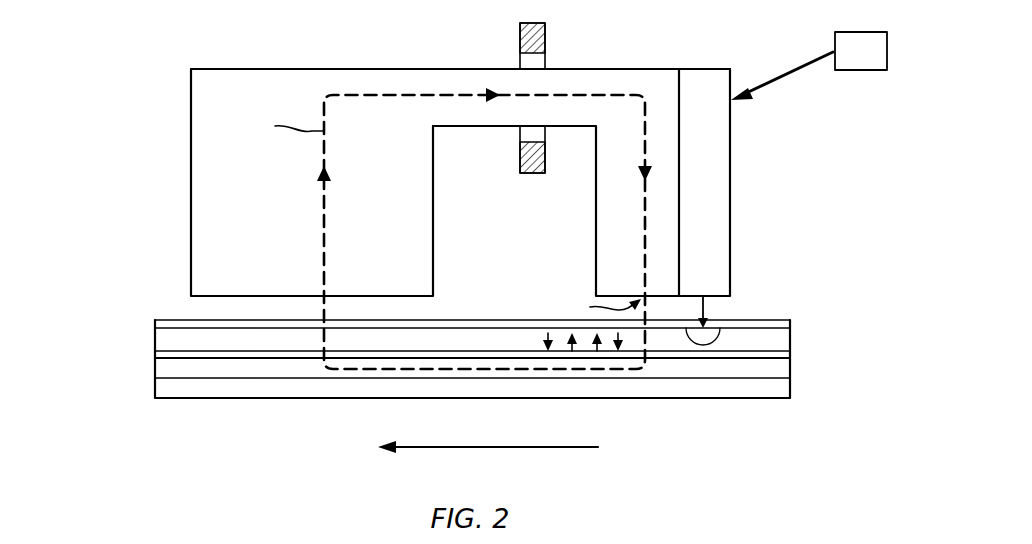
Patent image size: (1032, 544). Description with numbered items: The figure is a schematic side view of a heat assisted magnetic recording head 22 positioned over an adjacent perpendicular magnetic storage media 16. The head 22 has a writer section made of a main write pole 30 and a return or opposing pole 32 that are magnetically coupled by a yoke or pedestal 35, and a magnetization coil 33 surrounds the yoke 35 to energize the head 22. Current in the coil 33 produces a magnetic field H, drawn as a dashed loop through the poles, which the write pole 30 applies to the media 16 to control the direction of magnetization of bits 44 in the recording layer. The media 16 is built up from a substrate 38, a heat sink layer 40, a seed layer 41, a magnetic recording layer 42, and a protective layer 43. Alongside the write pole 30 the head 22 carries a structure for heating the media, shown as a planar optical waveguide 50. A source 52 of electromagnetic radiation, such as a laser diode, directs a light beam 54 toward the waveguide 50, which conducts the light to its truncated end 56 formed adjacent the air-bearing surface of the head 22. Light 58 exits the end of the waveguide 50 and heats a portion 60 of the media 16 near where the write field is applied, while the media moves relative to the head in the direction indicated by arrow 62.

The magnetic storage media 16 is at (118, 297).
The HAMR recording head 22 is at (157, 88).
The main write pole 30 is at (604, 228).
The return pole 32 is at (200, 162).
The magnetization coil 33 is at (520, 40).
The yoke 35 is at (597, 83).
The substrate 38 is at (300, 392).
The heat sink layer 40 is at (160, 369).
The seed layer 41 is at (160, 354).
The magnetic recording layer 42 is at (165, 340).
The protective layer 43 is at (168, 323).
The bits 44 is at (545, 340).
The planar optical waveguide 50 is at (741, 177).
The source of electromagnetic radiation 52 is at (856, 42).
The light beam 54 is at (783, 78).
The truncated end of the waveguide 56 is at (726, 297).
The light exiting the waveguide 58 is at (706, 311).
The heated portion of the media 60 is at (712, 337).
The arrow indicating relative movement 62 is at (455, 448).